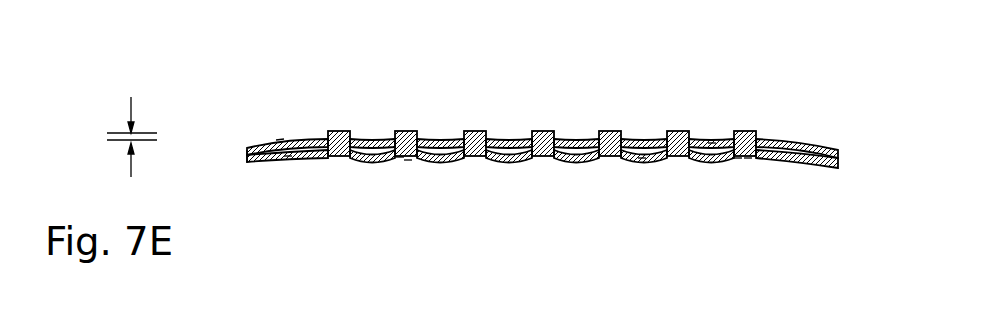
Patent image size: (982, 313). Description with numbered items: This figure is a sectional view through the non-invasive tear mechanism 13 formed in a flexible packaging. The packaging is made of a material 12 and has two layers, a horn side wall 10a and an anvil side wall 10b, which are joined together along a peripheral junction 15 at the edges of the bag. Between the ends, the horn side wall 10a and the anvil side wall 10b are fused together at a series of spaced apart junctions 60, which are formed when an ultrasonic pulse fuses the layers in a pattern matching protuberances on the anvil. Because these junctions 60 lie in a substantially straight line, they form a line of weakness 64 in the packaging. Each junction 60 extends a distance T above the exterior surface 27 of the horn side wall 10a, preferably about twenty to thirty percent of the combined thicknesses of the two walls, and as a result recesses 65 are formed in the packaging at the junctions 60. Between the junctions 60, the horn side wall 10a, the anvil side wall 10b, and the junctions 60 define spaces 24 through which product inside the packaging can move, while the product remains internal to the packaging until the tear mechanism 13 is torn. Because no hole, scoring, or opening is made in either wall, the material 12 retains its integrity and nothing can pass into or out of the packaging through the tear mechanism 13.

The distance T is at (132, 129).
The horn side wall 10a is at (293, 140).
The anvil side wall 10b is at (303, 163).
The material 12 is at (247, 165).
The non-invasive tear mechanism 13 is at (737, 160).
The peripheral junction 15 is at (247, 153).
The spaces 24 is at (288, 160).
The exterior surface 27 is at (280, 138).
The junctions 60 is at (352, 131).
The line of weakness 64 is at (408, 160).
The recesses 65 is at (400, 157).